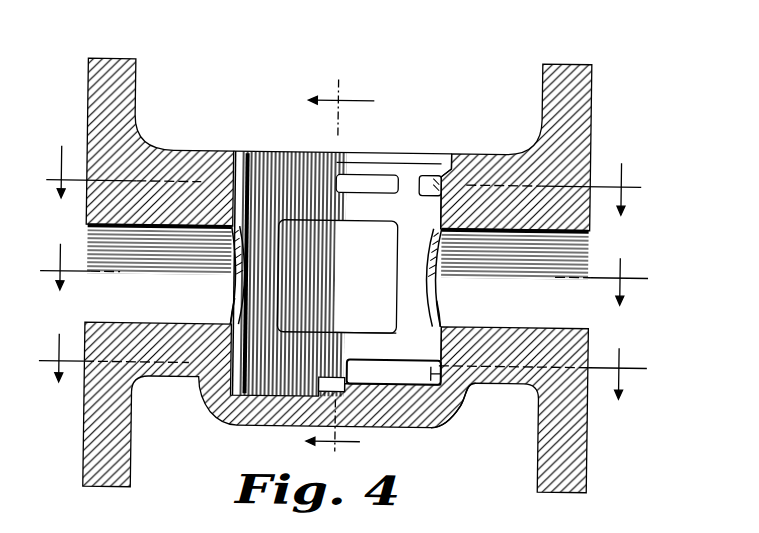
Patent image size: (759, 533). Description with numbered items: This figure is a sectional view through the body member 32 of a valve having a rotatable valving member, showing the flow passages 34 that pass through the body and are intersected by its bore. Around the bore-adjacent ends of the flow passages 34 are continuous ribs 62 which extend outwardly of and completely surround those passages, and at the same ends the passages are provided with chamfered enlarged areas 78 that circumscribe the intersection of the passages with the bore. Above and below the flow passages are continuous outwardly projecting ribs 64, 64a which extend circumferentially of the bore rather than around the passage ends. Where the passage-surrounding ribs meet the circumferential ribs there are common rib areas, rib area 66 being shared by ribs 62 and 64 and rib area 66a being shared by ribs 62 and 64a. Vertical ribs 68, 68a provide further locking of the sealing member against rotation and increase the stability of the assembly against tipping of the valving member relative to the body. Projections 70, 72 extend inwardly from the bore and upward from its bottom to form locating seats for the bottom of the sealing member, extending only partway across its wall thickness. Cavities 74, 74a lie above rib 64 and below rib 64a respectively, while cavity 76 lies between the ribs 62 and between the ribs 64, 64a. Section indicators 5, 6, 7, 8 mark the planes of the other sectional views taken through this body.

The body member 32 is at (170, 151).
The flow passages 34 is at (92, 308).
The continuous ribs 62 is at (241, 288).
The enlarged areas 78 is at (238, 306).
The continuous outwardly projecting rib 64 is at (355, 205).
The continuous outwardly projecting rib 64a is at (373, 344).
The rib area 66 is at (425, 191).
The rib area 66a is at (446, 325).
The vertical rib 68 is at (409, 180).
The vertical rib 68a is at (350, 374).
The projection 70 is at (334, 375).
The projection 72 is at (436, 378).
The cavity 74 is at (382, 170).
The cavity 74a is at (444, 374).
The cavity 76 is at (388, 311).
The section line 5- 5 is at (341, 263).
The section line 6- 6 is at (335, 180).
The section line 7- 7 is at (333, 270).
The section line 8- 8 is at (333, 363).